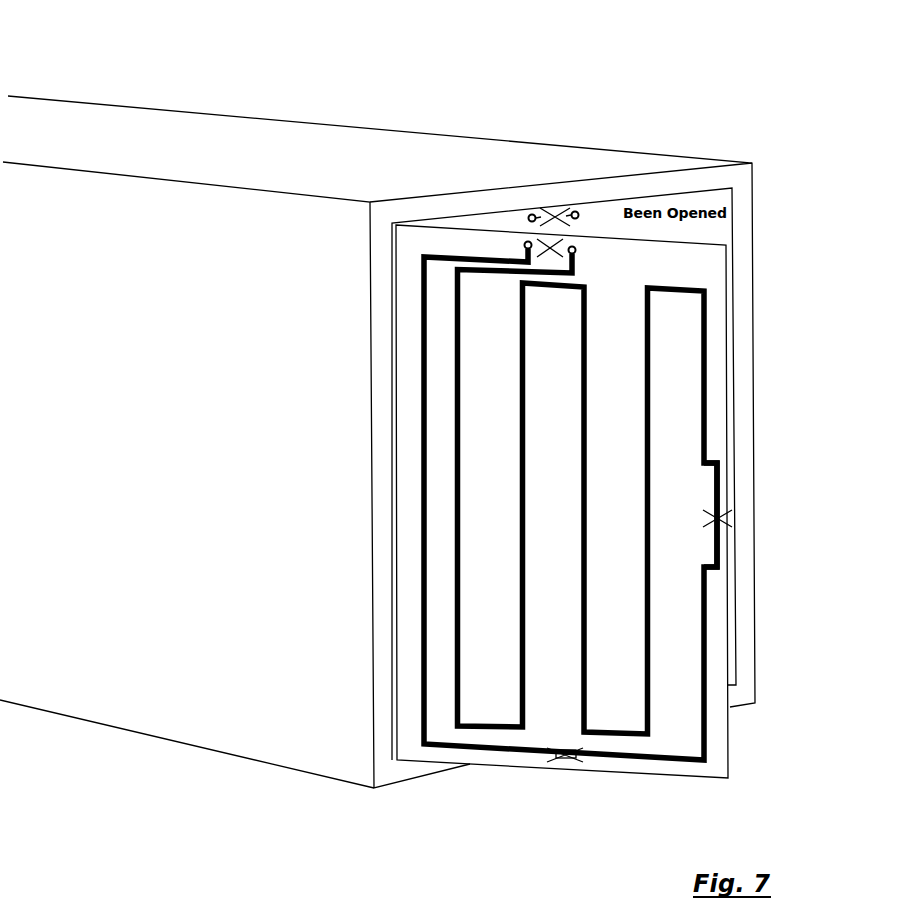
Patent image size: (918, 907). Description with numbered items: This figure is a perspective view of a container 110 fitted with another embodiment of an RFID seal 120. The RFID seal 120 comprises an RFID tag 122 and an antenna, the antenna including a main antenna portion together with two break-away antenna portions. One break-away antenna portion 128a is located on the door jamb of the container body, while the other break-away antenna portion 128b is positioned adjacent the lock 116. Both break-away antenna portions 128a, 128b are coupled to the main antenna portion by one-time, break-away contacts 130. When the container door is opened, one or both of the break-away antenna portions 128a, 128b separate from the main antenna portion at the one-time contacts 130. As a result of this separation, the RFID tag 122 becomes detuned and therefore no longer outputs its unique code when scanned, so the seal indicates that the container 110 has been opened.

The container 110 is at (88, 138).
The lock 116 is at (723, 504).
The RFID seal 120 is at (436, 770).
The RFID tag 122 is at (568, 770).
The break-away antenna portion 128a is at (558, 207).
The break-away antenna portion 128b is at (721, 454).
The one-time break-away contacts 130 is at (579, 215).